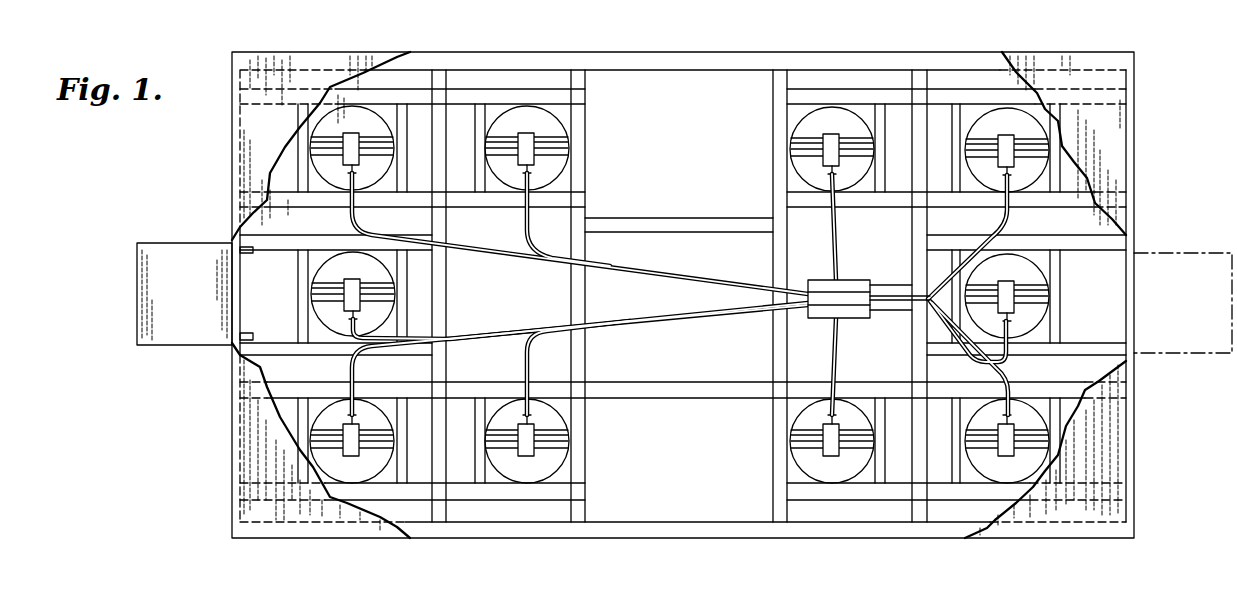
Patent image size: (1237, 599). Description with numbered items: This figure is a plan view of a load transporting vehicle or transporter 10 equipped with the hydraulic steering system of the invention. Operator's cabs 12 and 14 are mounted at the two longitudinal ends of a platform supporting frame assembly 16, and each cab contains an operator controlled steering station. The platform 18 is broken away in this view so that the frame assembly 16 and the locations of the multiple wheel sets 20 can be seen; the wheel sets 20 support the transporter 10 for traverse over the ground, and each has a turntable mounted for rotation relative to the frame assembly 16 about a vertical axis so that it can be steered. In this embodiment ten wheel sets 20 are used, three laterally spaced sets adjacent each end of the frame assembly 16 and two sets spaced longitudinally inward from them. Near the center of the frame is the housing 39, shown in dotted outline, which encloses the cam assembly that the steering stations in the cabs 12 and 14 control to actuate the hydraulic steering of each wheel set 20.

The transporter 10 is at (742, 545).
The operator's cab 12 is at (176, 243).
The operator's cab 14 is at (1172, 256).
The frame assembly 16 is at (672, 54).
The platform 18 is at (313, 55).
The wheel set 20 is at (368, 116).
The housing 39 is at (882, 248).